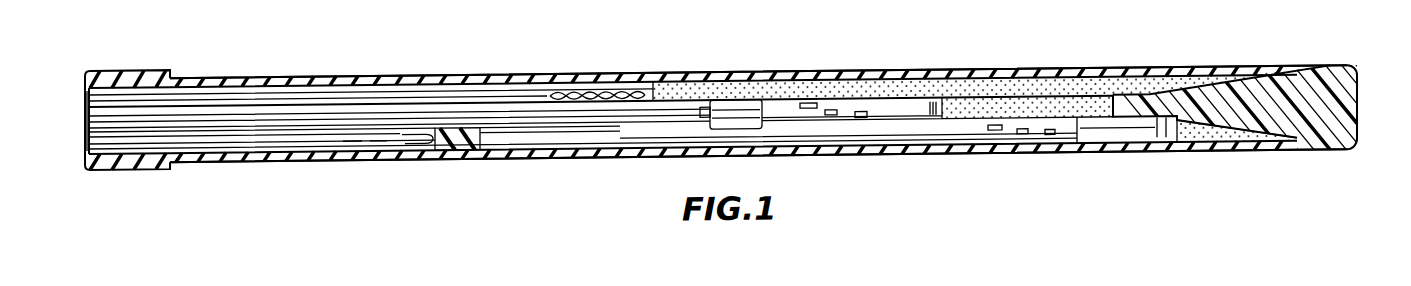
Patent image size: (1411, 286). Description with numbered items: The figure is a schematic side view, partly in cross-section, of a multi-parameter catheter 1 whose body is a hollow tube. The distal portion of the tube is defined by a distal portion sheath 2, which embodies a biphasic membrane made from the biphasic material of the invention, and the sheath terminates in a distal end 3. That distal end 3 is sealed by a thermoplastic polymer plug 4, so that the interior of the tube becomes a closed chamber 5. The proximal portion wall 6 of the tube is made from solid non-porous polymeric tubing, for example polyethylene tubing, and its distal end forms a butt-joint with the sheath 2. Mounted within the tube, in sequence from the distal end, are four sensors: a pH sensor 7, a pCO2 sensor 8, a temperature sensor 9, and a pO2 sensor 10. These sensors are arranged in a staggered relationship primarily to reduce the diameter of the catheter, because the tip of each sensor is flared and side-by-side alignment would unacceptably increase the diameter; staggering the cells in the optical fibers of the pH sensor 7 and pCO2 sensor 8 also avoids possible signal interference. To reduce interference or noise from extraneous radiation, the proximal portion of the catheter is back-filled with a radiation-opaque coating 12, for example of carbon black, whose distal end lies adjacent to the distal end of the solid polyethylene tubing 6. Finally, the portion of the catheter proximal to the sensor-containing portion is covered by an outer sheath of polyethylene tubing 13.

The multi-parameter catheter 1 is at (737, 78).
The distal portion sheath 2 is at (940, 90).
The distal end 3 is at (1357, 120).
The thermoplastic polymer plug 4 is at (1257, 139).
The closed chamber 5 is at (1030, 99).
The proximal portion wall 6 is at (242, 78).
The pH sensor 7 is at (917, 153).
The pCO2 sensor 8 is at (663, 124).
The temperature sensor 9 is at (578, 91).
The pO2 sensor 10 is at (423, 153).
The radiation-opaque coating 12 is at (87, 159).
The outer sheath of polyethylene tubing 13 is at (113, 73).